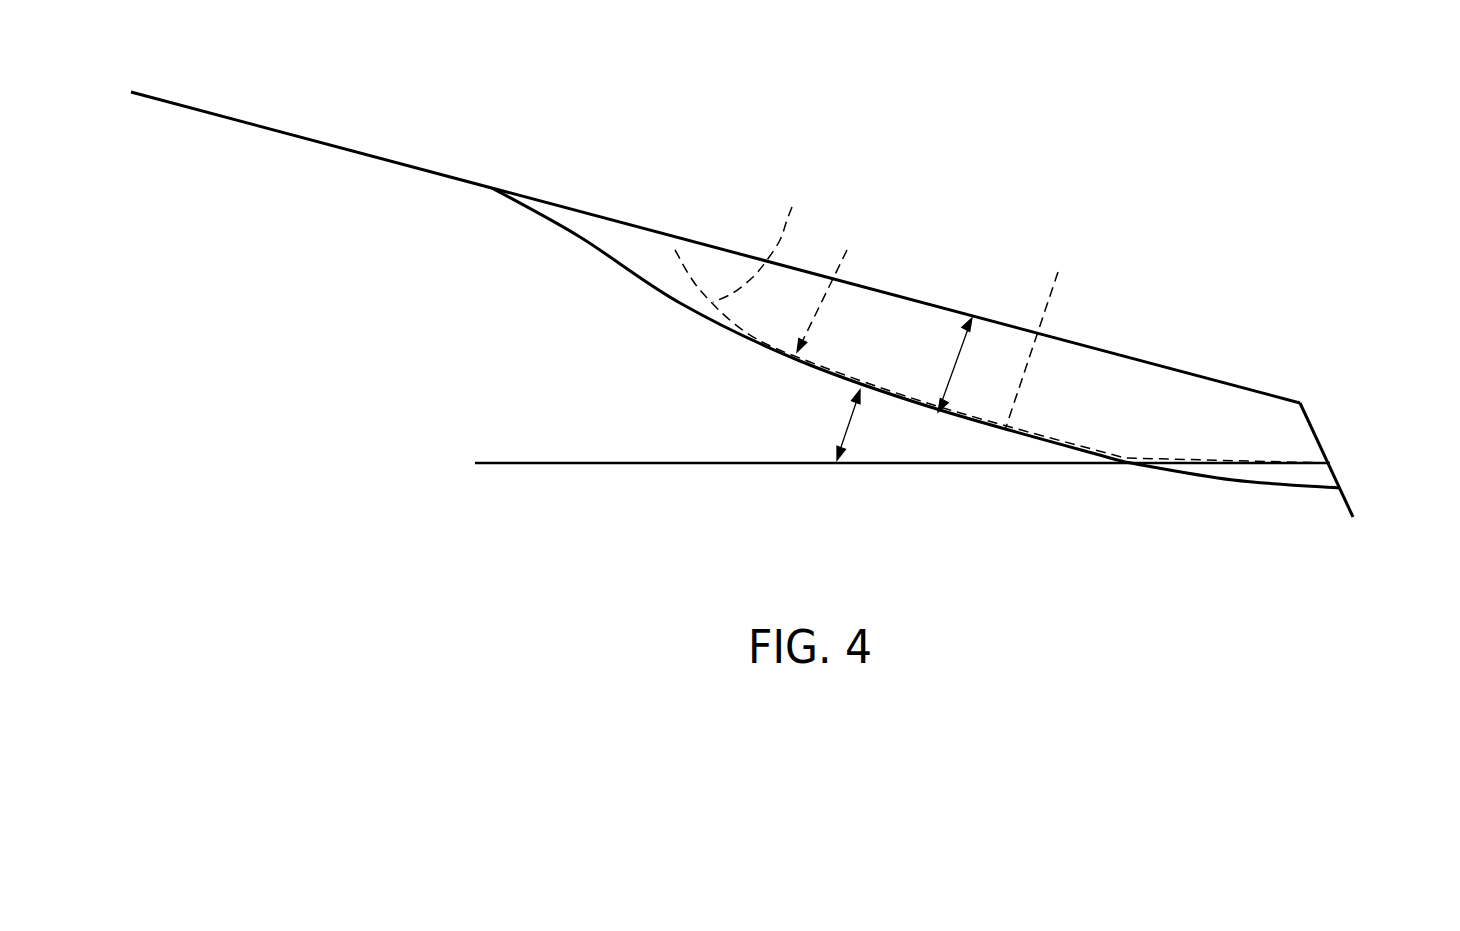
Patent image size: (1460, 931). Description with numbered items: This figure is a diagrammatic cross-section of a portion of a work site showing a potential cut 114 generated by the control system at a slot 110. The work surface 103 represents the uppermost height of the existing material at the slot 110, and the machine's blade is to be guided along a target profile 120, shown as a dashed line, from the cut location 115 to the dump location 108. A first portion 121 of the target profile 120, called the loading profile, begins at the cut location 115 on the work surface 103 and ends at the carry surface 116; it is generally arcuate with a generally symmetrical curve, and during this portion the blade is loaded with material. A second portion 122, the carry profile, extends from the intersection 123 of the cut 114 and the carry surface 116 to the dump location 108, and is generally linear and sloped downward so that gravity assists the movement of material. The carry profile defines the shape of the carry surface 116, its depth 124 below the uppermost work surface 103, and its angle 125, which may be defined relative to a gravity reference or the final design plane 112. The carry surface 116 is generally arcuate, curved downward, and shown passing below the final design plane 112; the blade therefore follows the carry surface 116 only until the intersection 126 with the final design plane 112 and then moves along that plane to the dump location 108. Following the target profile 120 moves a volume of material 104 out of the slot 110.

The work surface 103 is at (350, 150).
The volume of material 104 is at (1130, 403).
The dump location 108 is at (1358, 383).
The slot 110 is at (848, 200).
The final design plane 112 is at (638, 465).
The cut 114 is at (685, 265).
The cut location 115 is at (675, 250).
The carry surface 116 is at (577, 250).
The target profile 120 is at (835, 287).
The first portion 121 is at (768, 238).
The second portion 122 is at (1046, 338).
The intersection 123 is at (775, 340).
The depth of the carry surface 124 is at (950, 363).
The angle of the carry surface 125 is at (853, 425).
The intersection 126 is at (1130, 465).